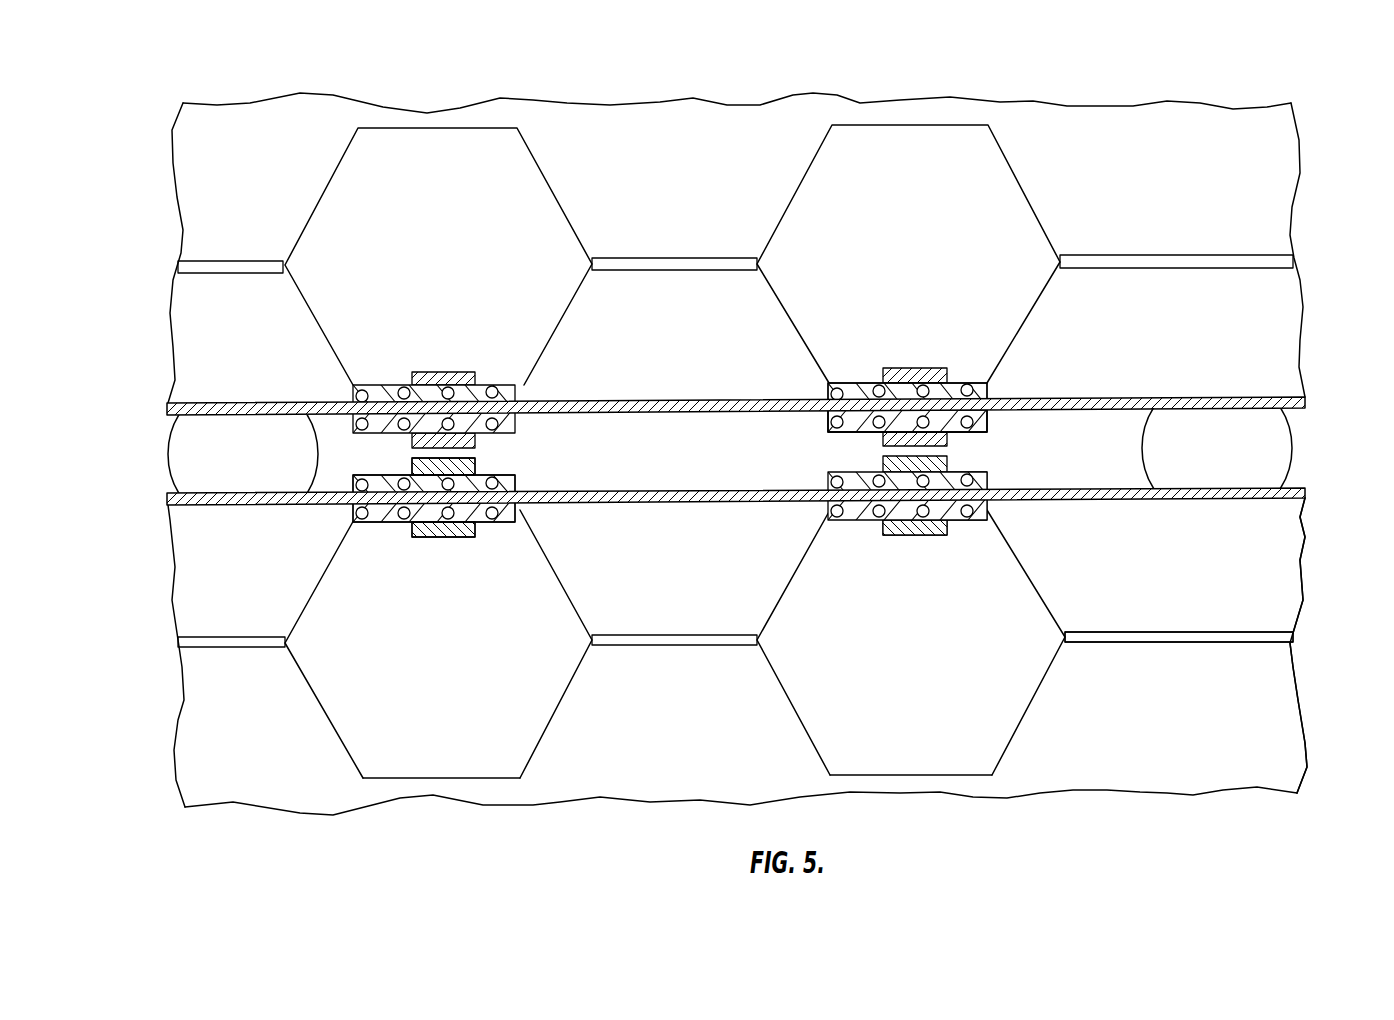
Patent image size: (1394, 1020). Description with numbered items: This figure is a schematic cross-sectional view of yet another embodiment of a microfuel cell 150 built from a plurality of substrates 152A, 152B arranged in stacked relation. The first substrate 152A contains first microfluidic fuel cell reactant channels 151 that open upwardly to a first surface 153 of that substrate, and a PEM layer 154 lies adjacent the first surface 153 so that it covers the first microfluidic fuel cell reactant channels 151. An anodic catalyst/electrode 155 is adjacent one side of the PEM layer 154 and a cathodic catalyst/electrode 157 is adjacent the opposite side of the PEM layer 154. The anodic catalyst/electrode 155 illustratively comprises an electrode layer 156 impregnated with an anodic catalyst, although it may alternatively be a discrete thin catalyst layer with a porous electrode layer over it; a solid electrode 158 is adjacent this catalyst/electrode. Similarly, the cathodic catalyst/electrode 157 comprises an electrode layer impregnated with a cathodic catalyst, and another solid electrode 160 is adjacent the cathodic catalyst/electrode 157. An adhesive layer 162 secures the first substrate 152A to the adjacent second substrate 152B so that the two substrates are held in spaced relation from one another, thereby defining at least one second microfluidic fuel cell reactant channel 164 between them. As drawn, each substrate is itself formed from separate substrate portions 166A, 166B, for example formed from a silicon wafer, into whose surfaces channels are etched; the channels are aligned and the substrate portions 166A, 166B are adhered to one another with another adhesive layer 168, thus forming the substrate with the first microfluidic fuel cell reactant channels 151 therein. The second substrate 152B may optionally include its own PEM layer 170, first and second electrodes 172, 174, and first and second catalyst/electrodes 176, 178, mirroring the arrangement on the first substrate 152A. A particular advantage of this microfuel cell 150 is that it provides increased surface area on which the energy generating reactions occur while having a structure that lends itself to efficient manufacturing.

The microfuel cell 150 is at (1229, 86).
The first microfluidic fuel cell reactant channels 151 is at (412, 750).
The first substrate 152A is at (166, 703).
The second substrate 152B is at (168, 272).
The first surface 153 is at (352, 508).
The PEM layer 154 is at (167, 497).
The anodic catalyst/electrode 155 is at (384, 531).
The electrode layer 156 is at (503, 522).
The cathodic catalyst/electrode 157 is at (349, 463).
The solid electrode 158 is at (383, 475).
The solid electrode 160 is at (412, 473).
The adhesive layer 162 is at (175, 431).
The second microfluidic fuel cell reactant channel 164 is at (1095, 412).
The substrate portion 166A is at (1306, 560).
The substrate portion 166B is at (1305, 750).
The adhesive layer 168 is at (1288, 640).
The PEM layer 170 is at (1308, 399).
The first electrode 172 is at (1093, 296).
The second electrode 174 is at (1118, 275).
The first catalyst/electrode 176 is at (1090, 318).
The second catalyst/electrode 178 is at (1100, 344).